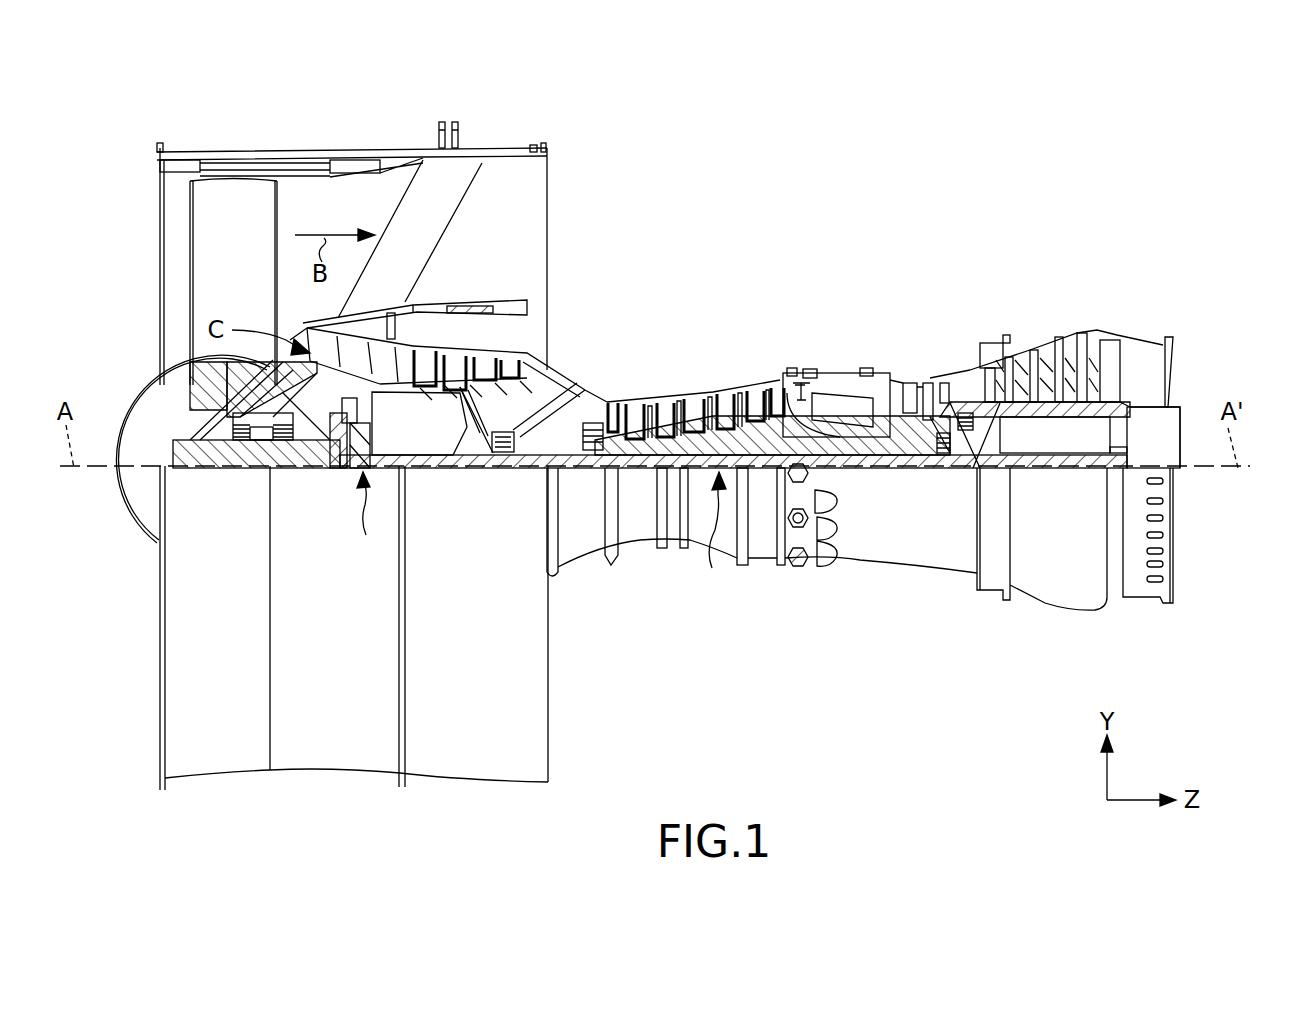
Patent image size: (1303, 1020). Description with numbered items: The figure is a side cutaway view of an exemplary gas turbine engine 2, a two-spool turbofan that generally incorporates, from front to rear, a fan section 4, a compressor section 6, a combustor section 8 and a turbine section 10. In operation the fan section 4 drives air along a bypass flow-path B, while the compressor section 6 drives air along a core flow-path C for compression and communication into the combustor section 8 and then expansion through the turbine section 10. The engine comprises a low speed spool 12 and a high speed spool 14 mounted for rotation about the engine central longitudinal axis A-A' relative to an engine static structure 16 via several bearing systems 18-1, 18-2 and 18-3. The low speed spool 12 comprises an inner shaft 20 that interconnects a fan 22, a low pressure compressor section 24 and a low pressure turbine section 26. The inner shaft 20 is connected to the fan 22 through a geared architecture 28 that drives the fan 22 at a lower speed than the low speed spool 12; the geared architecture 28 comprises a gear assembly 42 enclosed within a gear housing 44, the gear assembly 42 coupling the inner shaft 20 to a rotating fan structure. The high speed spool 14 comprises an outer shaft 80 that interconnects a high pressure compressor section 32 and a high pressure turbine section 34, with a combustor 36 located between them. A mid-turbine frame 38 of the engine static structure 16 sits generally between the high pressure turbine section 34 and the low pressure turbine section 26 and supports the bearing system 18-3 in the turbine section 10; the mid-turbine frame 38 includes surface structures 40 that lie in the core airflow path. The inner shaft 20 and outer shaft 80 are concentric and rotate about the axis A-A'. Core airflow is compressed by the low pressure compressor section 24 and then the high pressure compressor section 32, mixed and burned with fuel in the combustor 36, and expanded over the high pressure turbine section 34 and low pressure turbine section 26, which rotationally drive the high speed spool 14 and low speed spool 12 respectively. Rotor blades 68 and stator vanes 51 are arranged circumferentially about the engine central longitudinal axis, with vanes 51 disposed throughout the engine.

The gas turbine engine 2 is at (889, 190).
The fan section 4 is at (400, 130).
The compressor section 6 is at (413, 263).
The combustor section 8 is at (787, 263).
The turbine section 10 is at (1110, 263).
The low speed spool 12 is at (767, 531).
The high speed spool 14 is at (757, 437).
The engine static structure 16 is at (332, 753).
The bearing system 18-1 is at (247, 442).
The bearing system 18-2 is at (503, 455).
The bearing system 18-3 is at (950, 468).
The inner shaft 20 is at (568, 468).
The fan 22 is at (244, 280).
The low pressure compressor section 24 is at (482, 358).
The low pressure turbine section 26 is at (1038, 348).
The geared architecture 28 is at (365, 517).
The high pressure compressor section 32 is at (697, 425).
The high pressure turbine section 34 is at (908, 373).
The combustor 36 is at (835, 398).
The mid-turbine frame 38 is at (945, 383).
The surface structures 40 is at (967, 382).
The gear assembly 42 is at (368, 446).
The gear housing 44 is at (377, 417).
The stator vane 51 is at (641, 400).
The rotor blade 68 is at (915, 380).
The outer shaft 80 is at (833, 447).